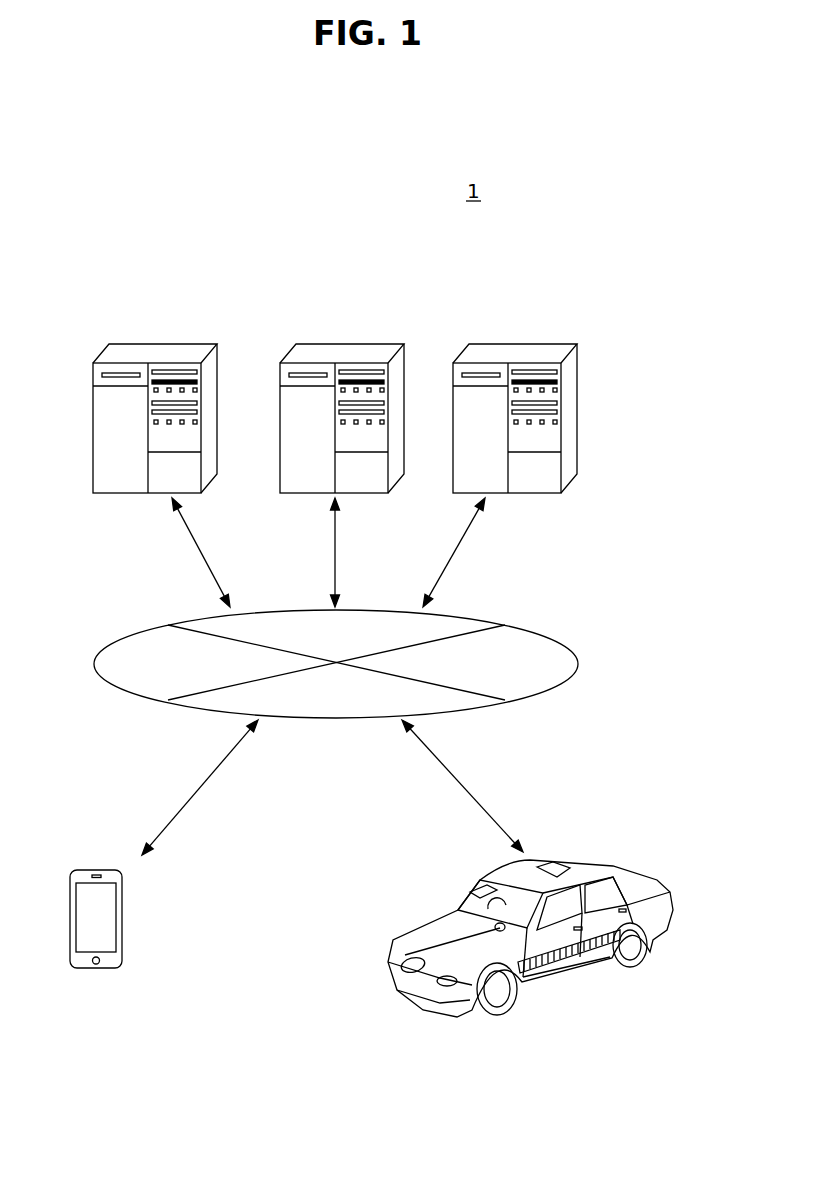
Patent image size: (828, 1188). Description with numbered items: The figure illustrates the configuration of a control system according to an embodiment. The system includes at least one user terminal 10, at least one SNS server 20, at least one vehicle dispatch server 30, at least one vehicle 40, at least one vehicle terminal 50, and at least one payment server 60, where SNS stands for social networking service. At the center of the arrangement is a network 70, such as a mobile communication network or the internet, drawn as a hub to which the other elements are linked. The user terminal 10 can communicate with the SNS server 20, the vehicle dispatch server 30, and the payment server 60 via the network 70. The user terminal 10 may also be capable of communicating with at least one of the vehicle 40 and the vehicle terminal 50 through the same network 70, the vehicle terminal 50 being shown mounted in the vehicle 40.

The user terminal 10 is at (97, 969).
The SNS server 20 is at (155, 352).
The vehicle dispatch server 30 is at (342, 352).
The vehicle 40 is at (567, 977).
The vehicle terminal 50 is at (477, 888).
The payment server 60 is at (518, 352).
The network 70 is at (578, 660).